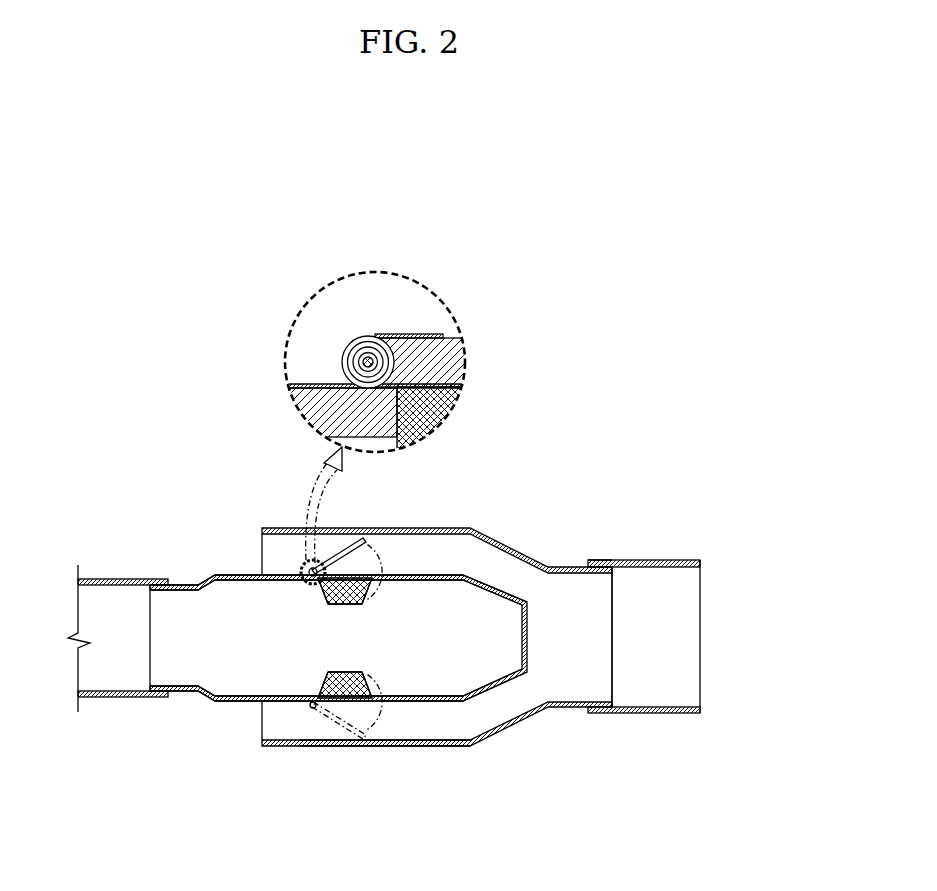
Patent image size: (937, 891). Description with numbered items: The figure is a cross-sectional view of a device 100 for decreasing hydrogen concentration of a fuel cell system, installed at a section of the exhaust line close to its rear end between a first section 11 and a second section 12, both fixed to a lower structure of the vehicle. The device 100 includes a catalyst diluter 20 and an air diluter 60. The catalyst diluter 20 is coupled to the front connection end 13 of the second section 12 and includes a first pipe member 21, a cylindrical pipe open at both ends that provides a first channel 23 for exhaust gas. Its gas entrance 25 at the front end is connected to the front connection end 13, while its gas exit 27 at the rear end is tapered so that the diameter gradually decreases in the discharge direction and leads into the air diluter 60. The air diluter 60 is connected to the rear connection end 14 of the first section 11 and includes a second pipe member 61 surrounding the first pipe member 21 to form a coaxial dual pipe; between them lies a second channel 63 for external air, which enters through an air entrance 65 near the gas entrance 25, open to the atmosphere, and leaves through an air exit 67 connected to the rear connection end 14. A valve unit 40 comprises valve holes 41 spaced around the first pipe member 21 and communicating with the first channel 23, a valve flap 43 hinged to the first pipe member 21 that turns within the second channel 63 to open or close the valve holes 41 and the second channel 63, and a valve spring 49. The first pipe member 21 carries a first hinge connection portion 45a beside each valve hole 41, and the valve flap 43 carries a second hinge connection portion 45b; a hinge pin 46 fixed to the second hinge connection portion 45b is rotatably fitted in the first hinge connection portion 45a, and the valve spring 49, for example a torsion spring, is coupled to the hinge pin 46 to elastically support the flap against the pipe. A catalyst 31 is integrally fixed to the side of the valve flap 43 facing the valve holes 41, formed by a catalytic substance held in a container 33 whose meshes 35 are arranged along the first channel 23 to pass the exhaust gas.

The device for decreasing hydrogen concentration 100 is at (134, 305).
The first section 11 is at (684, 714).
The second section 12 is at (112, 698).
The front connection end 13 is at (156, 578).
The rear connection end 14 is at (596, 560).
The catalyst diluter 20 is at (243, 818).
The first pipe member 21 is at (232, 704).
The first channel 23 is at (176, 606).
The gas entrance 25 is at (181, 585).
The gas exit 27 is at (510, 586).
The catalyst 31 is at (393, 818).
The container 33 is at (370, 712).
The meshes 35 is at (353, 720).
The valve unit 40 is at (318, 708).
The valve holes 41 is at (385, 541).
The valve flap 43 is at (332, 710).
The first hinge connection portion 45a is at (345, 362).
The second hinge connection portion 45b is at (346, 338).
The hinge pin 46 is at (366, 354).
The valve spring 49 is at (410, 336).
The air diluter 60 is at (503, 735).
The second pipe member 61 is at (443, 746).
The second channel 63 is at (293, 557).
The air entrance 65 is at (262, 723).
The air exit 67 is at (614, 656).